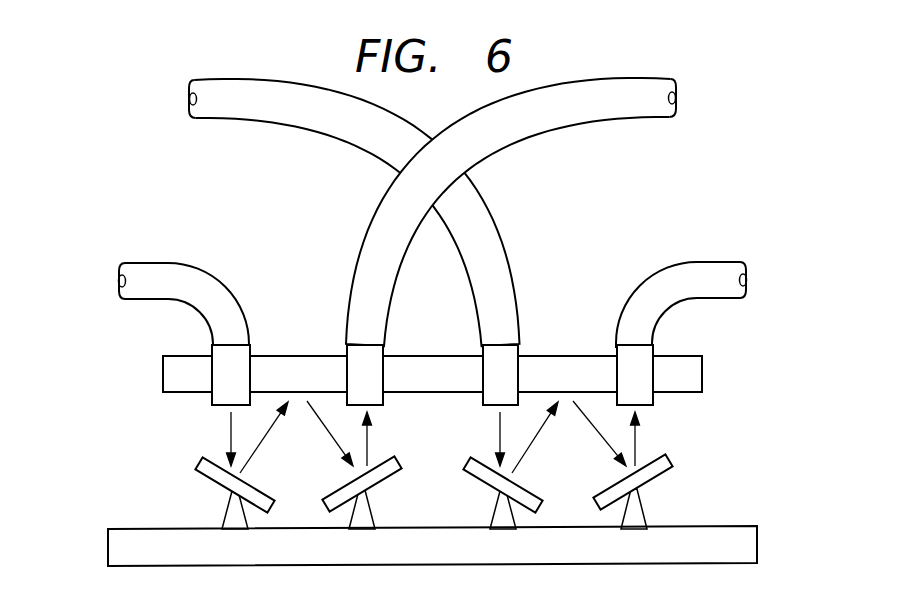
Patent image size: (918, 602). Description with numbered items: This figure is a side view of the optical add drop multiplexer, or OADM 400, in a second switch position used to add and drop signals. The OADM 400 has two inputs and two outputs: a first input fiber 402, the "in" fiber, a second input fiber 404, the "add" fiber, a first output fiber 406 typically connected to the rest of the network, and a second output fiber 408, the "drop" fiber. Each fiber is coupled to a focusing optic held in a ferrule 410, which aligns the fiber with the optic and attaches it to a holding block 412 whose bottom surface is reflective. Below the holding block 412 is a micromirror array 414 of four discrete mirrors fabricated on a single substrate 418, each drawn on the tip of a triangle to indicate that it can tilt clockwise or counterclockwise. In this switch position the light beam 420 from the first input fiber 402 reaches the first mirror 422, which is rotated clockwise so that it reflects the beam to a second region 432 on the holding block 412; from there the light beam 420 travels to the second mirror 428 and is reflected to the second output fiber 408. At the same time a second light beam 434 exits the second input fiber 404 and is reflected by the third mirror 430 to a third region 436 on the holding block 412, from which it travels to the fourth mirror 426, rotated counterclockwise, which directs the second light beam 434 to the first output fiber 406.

The optical add drop multiplexer (OADM) 400 is at (112, 119).
The first input fiber 402 is at (268, 86).
The second input fiber 404 is at (163, 268).
The first output fiber 406 is at (596, 84).
The second output fiber 408 is at (700, 264).
The ferrule 410 is at (214, 352).
The holding block 412 is at (163, 378).
The micromirror array 414 is at (110, 481).
The substrate 418 is at (757, 545).
The light beam 420 is at (497, 419).
The first mirror 422 is at (528, 488).
The fourth mirror 426 is at (375, 485).
The second mirror 428 is at (645, 484).
The third mirror 430 is at (223, 484).
The second point or region 432 is at (566, 398).
The second light beam 434 is at (229, 418).
The third point or region 436 is at (300, 398).